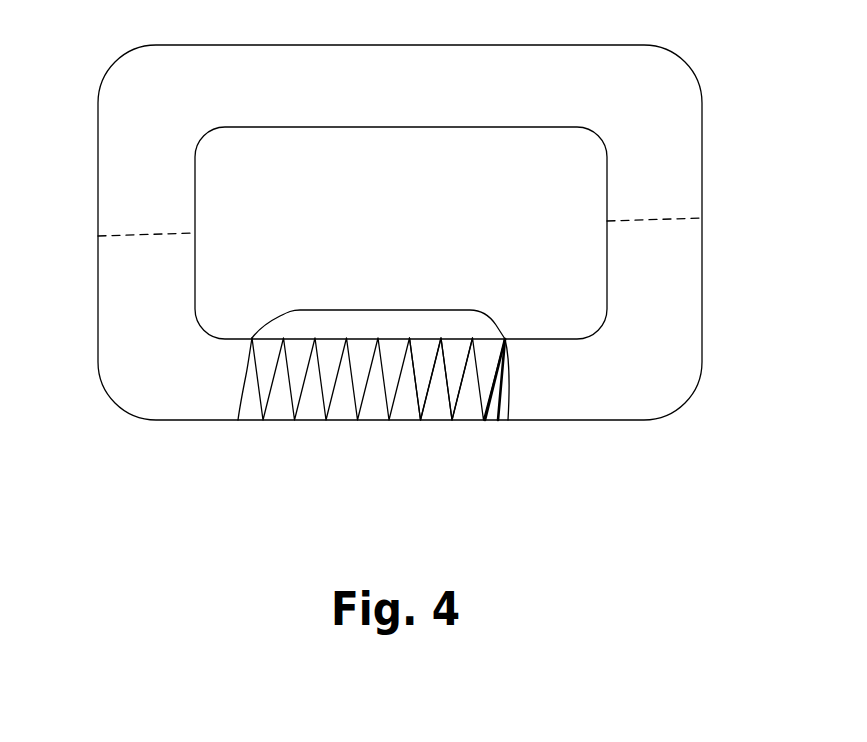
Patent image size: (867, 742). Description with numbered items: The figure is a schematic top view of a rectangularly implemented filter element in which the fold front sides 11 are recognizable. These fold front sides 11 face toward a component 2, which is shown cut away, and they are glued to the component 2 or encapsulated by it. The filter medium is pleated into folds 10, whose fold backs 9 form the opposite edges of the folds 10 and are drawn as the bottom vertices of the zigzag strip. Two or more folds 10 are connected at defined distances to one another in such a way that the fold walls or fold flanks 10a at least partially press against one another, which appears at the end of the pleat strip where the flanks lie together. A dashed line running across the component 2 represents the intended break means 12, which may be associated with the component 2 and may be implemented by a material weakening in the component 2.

The component 2 is at (118, 358).
The fold backs 9 is at (423, 420).
The folds 10 is at (337, 388).
The fold flanks 10a is at (497, 378).
The fold front sides 11 is at (258, 395).
The intended break means 12 is at (688, 214).